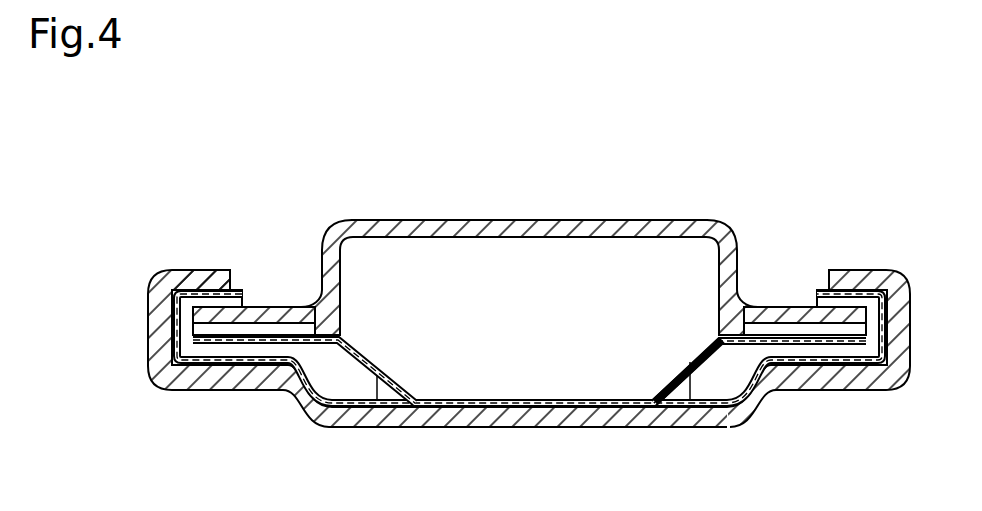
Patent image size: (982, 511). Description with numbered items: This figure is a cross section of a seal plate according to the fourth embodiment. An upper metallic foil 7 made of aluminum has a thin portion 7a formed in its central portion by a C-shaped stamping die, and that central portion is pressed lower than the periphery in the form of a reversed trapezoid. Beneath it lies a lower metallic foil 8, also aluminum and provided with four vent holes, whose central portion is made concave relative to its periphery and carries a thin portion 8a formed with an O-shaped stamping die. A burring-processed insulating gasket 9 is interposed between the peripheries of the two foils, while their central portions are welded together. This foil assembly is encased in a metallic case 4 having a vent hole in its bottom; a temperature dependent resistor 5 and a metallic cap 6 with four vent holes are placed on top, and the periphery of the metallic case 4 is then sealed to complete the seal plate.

The metallic case 4 is at (208, 277).
The temperature dependent resistor 5 is at (758, 327).
The metallic cap 6 is at (398, 228).
The upper metallic foil 7 is at (706, 365).
The thin portion 7a is at (640, 400).
The lower metallic foil 8 is at (667, 410).
The thin portion 8a is at (598, 405).
The insulating gasket 9 is at (185, 300).